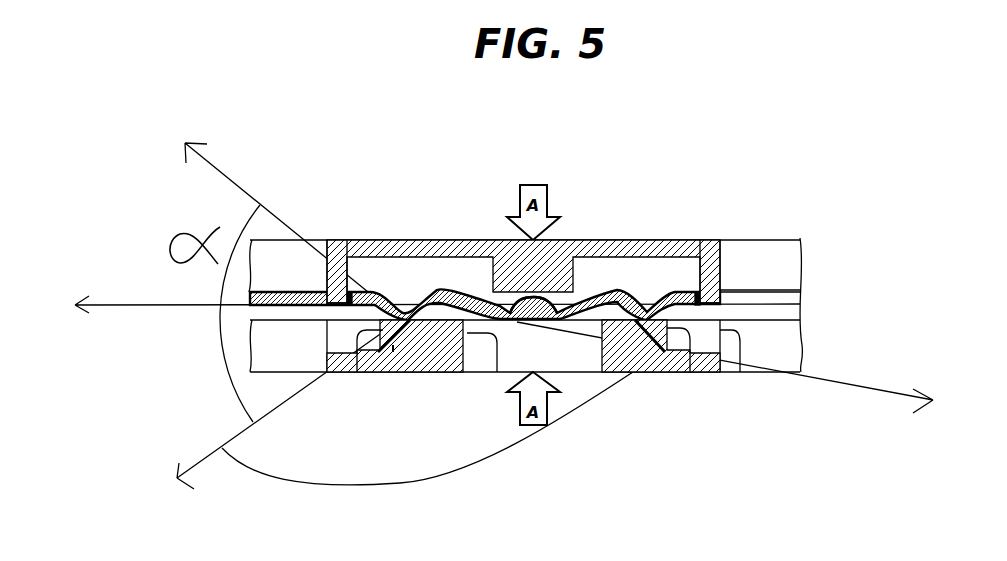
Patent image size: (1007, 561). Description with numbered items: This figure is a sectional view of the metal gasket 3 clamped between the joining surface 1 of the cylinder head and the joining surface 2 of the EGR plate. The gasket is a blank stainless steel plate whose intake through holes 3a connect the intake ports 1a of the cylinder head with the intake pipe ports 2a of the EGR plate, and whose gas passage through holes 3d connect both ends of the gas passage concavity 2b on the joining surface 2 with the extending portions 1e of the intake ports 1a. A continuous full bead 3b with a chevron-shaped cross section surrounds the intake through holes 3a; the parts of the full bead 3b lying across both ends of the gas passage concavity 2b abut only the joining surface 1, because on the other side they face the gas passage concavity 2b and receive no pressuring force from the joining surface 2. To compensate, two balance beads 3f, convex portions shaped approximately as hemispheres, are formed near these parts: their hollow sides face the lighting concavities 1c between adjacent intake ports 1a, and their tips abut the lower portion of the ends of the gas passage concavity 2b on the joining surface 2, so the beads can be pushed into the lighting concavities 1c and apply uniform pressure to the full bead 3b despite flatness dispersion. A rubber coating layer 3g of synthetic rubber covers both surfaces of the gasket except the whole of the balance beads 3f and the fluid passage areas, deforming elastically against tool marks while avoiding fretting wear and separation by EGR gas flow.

The joining surface 1 is at (782, 304).
The intake port 1a is at (740, 372).
The lighting concavity 1c is at (496, 372).
The extending portion 1e is at (690, 372).
The joining surface 2 is at (762, 306).
The intake pipe port 2a is at (718, 277).
The gas passage concavity 2b is at (641, 258).
The metal gasket 3 is at (815, 299).
The intake through hole 3a is at (786, 299).
The full bead 3b is at (640, 335).
The gas passage through hole 3d is at (688, 296).
The balance bead 3f is at (520, 300).
The rubber coating layer 3g is at (393, 345).